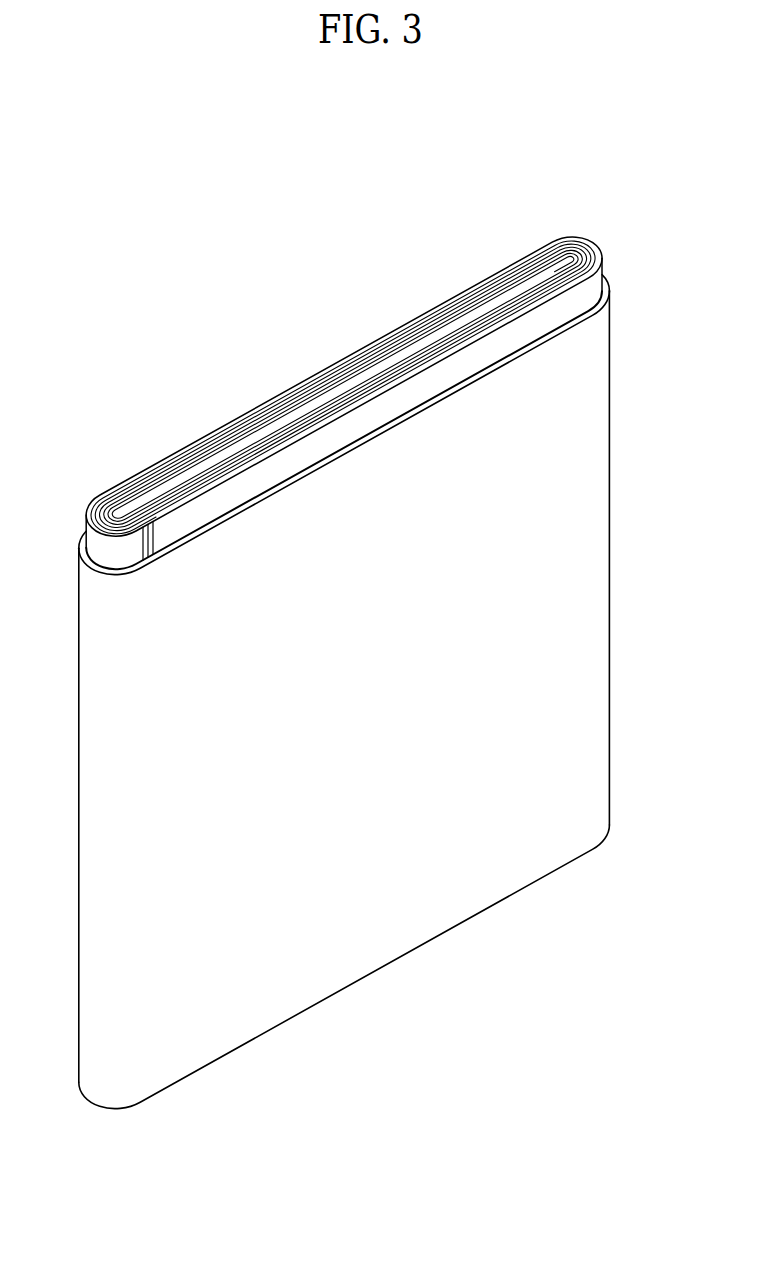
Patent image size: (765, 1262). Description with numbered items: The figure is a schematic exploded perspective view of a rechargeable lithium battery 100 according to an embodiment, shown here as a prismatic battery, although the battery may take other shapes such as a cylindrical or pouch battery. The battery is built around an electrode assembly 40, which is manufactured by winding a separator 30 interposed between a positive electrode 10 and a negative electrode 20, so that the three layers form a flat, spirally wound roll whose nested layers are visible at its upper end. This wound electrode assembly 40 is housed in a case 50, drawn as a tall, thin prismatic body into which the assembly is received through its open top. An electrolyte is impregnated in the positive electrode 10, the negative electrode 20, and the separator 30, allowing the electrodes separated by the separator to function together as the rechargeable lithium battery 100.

The rechargeable lithium battery 100 is at (329, 118).
The positive electrode 10 is at (601, 255).
The negative electrode 20 is at (571, 248).
The separator 30 is at (589, 253).
The electrode assembly 40 is at (357, 366).
The case 50 is at (595, 545).